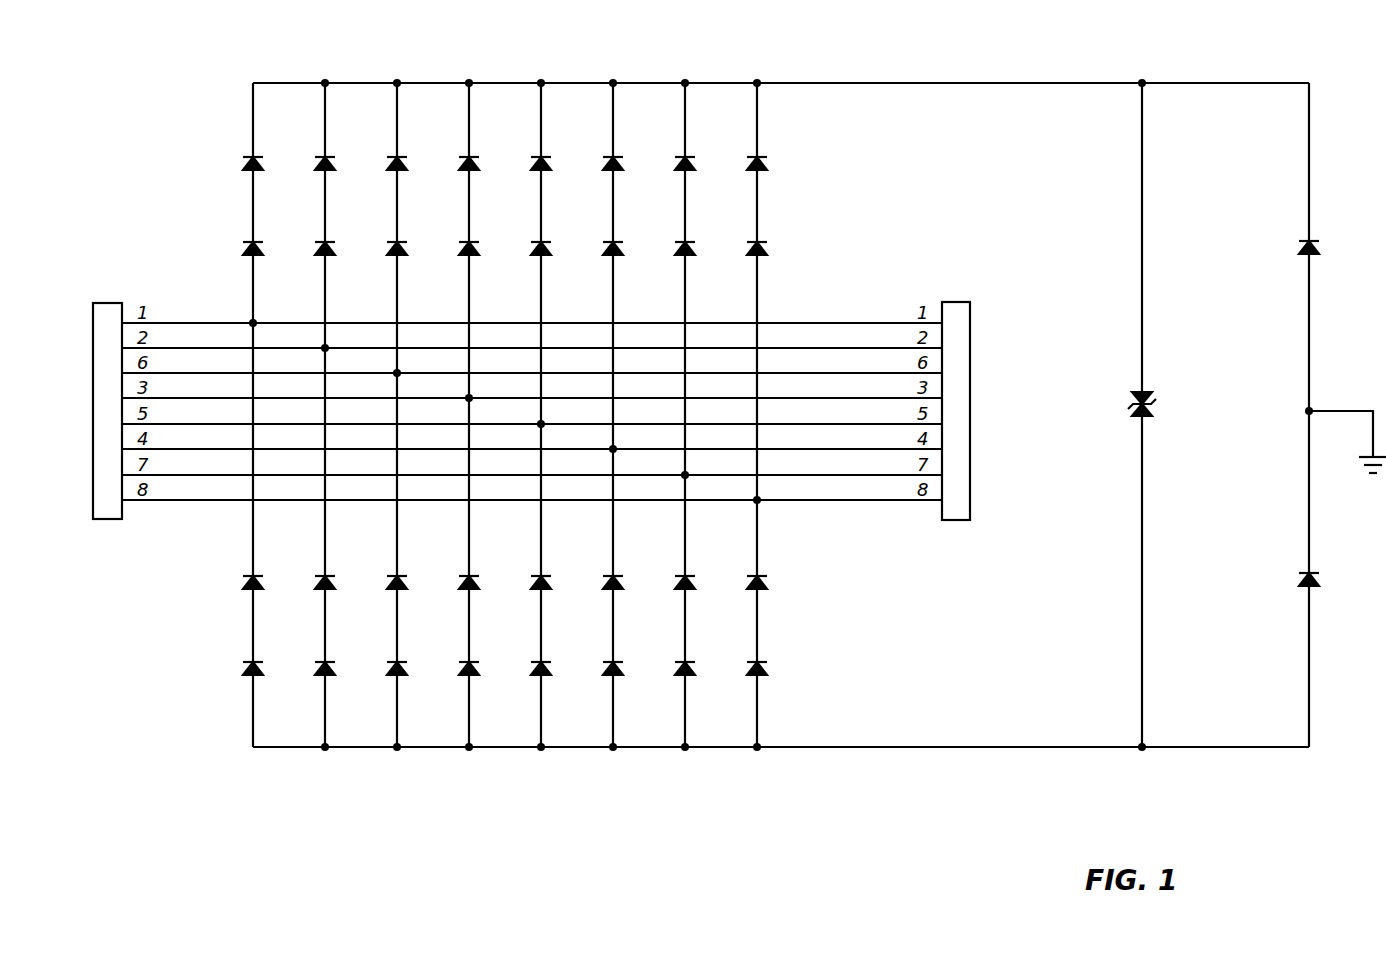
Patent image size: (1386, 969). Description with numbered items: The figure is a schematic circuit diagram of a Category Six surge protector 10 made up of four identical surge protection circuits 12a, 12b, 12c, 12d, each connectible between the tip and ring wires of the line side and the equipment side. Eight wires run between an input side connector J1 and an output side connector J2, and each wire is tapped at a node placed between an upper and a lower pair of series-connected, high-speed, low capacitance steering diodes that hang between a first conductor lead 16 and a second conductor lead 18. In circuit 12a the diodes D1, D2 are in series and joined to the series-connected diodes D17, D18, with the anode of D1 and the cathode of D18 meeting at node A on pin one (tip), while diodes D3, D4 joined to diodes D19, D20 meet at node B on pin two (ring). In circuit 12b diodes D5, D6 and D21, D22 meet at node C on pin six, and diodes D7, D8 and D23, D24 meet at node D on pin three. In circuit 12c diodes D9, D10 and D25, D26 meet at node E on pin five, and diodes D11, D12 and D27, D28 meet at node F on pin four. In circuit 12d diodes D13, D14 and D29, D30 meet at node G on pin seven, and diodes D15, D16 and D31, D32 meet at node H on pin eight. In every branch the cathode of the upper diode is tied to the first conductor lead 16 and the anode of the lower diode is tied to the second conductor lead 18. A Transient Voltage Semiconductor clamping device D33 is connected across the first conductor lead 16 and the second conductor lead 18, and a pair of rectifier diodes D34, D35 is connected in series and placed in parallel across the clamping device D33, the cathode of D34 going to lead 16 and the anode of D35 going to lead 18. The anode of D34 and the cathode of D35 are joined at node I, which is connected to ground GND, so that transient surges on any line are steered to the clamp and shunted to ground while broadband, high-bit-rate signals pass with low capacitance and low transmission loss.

The surge protector 10 is at (650, 62).
The first conductor lead 16 is at (862, 83).
The second conductor lead 18 is at (862, 747).
The surge protection circuit 12a is at (306, 302).
The surge protection circuit 12b is at (453, 302).
The surge protection circuit 12c is at (597, 302).
The surge protection circuit 12d is at (744, 302).
The input side RJ-45 connector J1 is at (107, 394).
The output side RJ-45 connector J2 is at (956, 395).
The node A is at (253, 323).
The node B is at (325, 348).
The node C is at (397, 373).
The node D is at (469, 398).
The node E is at (541, 424).
The node F is at (613, 449).
The node G is at (685, 475).
The node H is at (757, 500).
The node I is at (1309, 411).
The ground GND is at (1347, 442).
The steering diode D1 is at (273, 239).
The steering diode D2 is at (273, 154).
The steering diode D3 is at (345, 239).
The steering diode D4 is at (345, 154).
The steering diode D5 is at (417, 239).
The steering diode D6 is at (417, 154).
The steering diode D7 is at (489, 239).
The steering diode D8 is at (489, 154).
The steering diode D9 is at (561, 239).
The steering diode D10 is at (565, 154).
The steering diode D11 is at (637, 239).
The steering diode D12 is at (637, 154).
The steering diode D13 is at (709, 239).
The steering diode D14 is at (709, 154).
The steering diode D15 is at (781, 239).
The steering diode D16 is at (781, 154).
The steering diode D17 is at (276, 659).
The steering diode D18 is at (276, 573).
The steering diode D19 is at (348, 573).
The steering diode D20 is at (348, 659).
The steering diode D21 is at (420, 573).
The steering diode D22 is at (420, 659).
The steering diode D23 is at (492, 573).
The steering diode D24 is at (492, 659).
The steering diode D25 is at (564, 573).
The steering diode D26 is at (564, 659).
The steering diode D27 is at (636, 573).
The steering diode D28 is at (636, 659).
The steering diode D29 is at (708, 573).
The steering diode D30 is at (708, 659).
The steering diode D31 is at (780, 573).
The steering diode D32 is at (780, 659).
The Transient Voltage Semiconductor clamping device D33 is at (1167, 415).
The rectifier diode D34 is at (1331, 237).
The rectifier diode D35 is at (1331, 569).